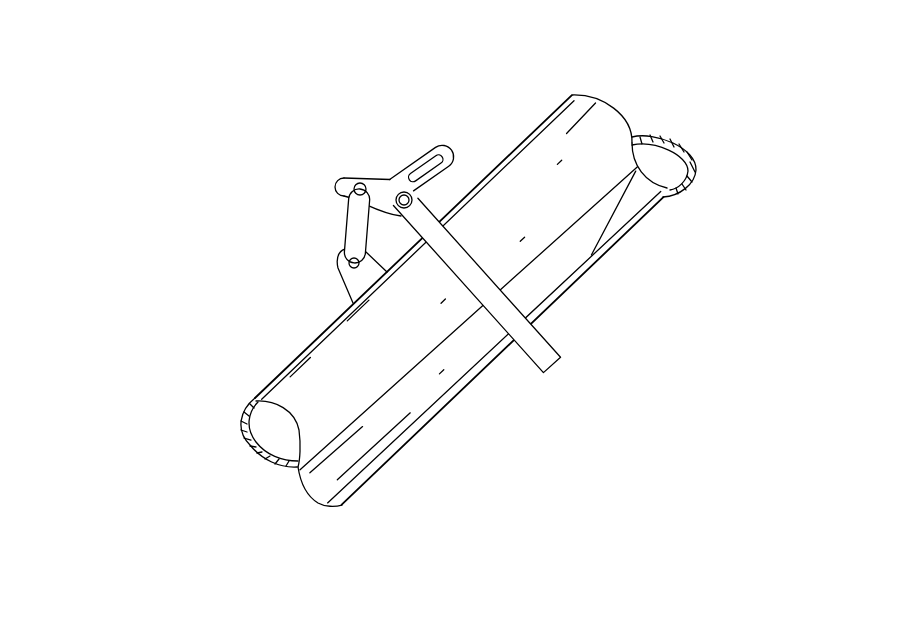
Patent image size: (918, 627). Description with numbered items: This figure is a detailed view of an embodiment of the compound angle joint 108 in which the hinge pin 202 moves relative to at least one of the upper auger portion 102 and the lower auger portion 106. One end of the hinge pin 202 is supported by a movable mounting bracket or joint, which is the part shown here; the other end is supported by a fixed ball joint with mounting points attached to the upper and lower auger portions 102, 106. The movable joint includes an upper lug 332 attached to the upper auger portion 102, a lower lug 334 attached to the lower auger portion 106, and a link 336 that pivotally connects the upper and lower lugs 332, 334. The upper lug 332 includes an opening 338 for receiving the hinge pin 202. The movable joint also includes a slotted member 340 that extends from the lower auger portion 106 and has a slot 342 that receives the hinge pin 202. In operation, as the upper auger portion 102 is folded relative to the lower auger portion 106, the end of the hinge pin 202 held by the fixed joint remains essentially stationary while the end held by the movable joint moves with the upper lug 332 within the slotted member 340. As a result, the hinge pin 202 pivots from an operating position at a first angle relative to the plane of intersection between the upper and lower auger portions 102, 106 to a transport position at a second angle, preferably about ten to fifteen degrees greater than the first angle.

The upper auger portion 102 is at (560, 106).
The lower auger portion 106 is at (253, 404).
The compound angle joint 108 is at (205, 243).
The hinge pin 202 is at (398, 192).
The upper lug 332 is at (340, 193).
The lower lug 334 is at (340, 279).
The link 336 is at (343, 230).
The opening 338 is at (414, 202).
The slotted member 340 is at (433, 148).
The slot 342 is at (424, 171).